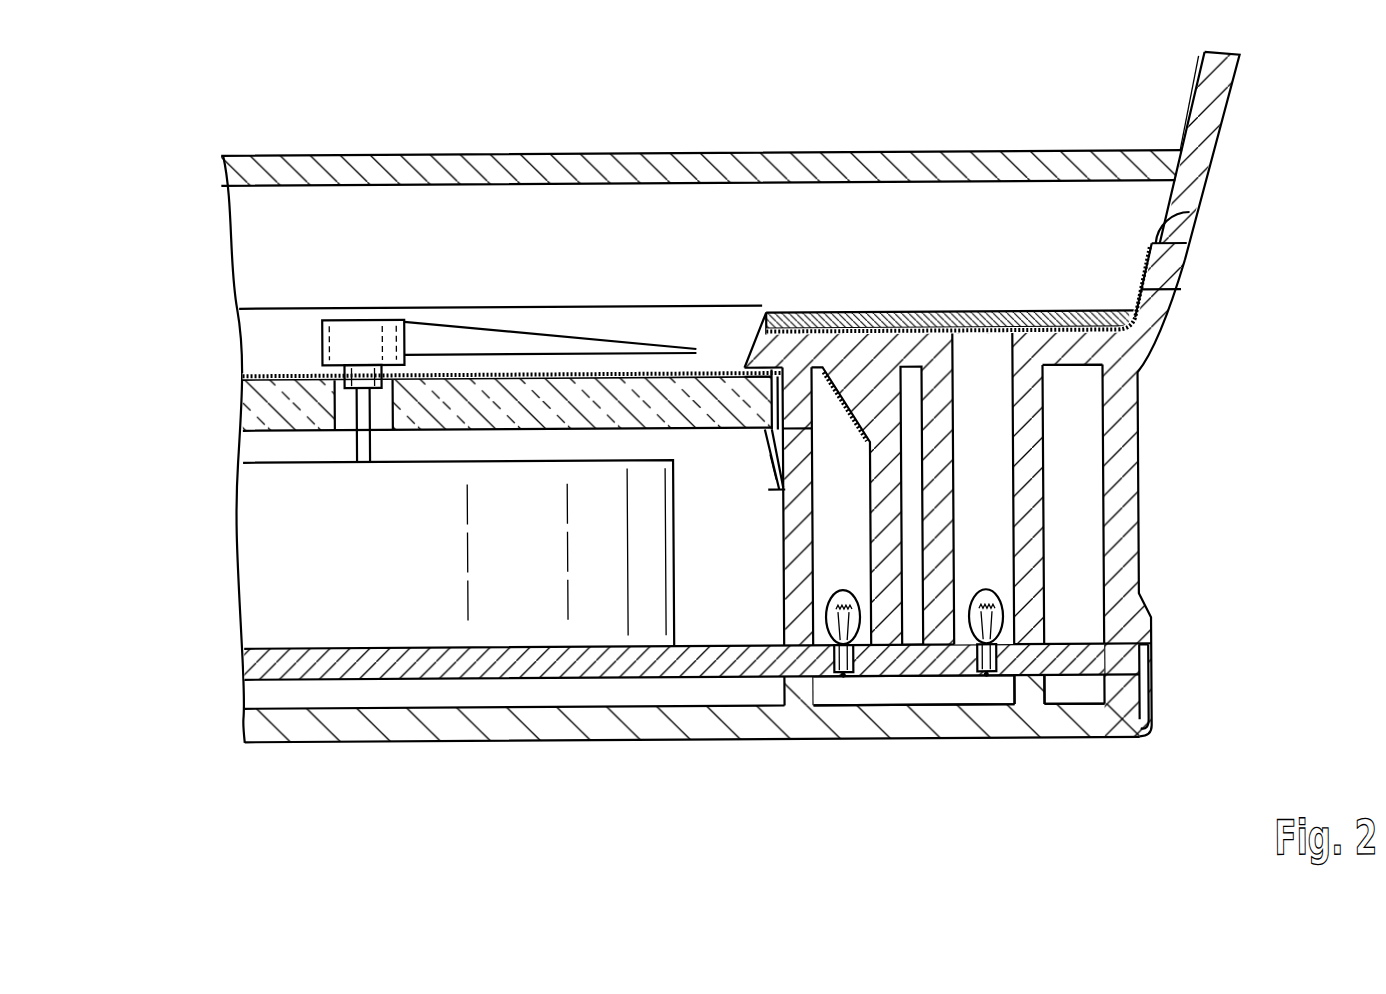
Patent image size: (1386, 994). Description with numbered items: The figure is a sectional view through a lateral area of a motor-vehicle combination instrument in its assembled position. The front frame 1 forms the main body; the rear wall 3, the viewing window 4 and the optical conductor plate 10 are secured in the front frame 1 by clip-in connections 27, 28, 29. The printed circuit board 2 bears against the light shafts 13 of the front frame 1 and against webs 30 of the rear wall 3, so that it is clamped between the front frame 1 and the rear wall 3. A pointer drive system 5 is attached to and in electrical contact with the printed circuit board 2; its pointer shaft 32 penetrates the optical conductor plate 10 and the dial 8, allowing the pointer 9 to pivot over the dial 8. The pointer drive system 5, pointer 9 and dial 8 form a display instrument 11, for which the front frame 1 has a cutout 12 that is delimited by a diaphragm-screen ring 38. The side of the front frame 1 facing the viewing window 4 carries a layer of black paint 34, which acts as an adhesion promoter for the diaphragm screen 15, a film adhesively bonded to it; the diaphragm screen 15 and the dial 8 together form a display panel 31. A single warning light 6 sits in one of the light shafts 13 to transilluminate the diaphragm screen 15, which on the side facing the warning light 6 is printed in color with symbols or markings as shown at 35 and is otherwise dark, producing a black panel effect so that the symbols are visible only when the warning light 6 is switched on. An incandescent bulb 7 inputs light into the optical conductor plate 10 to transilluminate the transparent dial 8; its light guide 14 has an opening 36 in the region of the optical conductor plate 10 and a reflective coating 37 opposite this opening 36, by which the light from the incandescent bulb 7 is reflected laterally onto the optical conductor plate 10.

The front frame 1 is at (1123, 560).
The printed circuit board 2 is at (258, 665).
The rear wall 3 is at (260, 725).
The viewing window 4 is at (1152, 170).
The pointer drive system 5 is at (260, 628).
The warning light 6 is at (985, 676).
The incandescent bulb 7 is at (842, 676).
The dial 8 is at (720, 368).
The pointer 9 is at (428, 336).
The optical conductor plate 10 is at (535, 410).
The display instrument 11 is at (542, 304).
The cutout 12 is at (656, 296).
The light shaft 13 is at (1028, 502).
The light guide 14 is at (793, 588).
The diaphragm screen 15 is at (907, 313).
The clip-in connection 27 is at (1168, 678).
The clip-in connection 28 is at (765, 480).
The clip-in connection 29 is at (1208, 233).
The web 30 is at (1032, 688).
The display panel 31 is at (798, 290).
The pointer shaft 32 is at (360, 446).
The layer of black paint 34 is at (1073, 335).
The color printing 35 is at (978, 313).
The opening 36 is at (762, 411).
The reflective coating 37 is at (837, 382).
The diaphragm-screen ring 38 is at (752, 368).